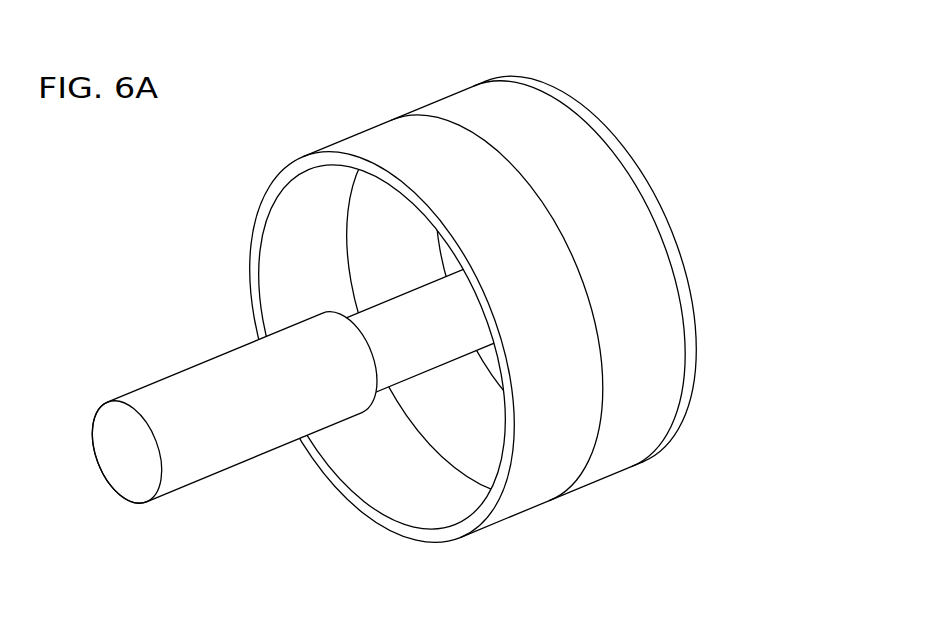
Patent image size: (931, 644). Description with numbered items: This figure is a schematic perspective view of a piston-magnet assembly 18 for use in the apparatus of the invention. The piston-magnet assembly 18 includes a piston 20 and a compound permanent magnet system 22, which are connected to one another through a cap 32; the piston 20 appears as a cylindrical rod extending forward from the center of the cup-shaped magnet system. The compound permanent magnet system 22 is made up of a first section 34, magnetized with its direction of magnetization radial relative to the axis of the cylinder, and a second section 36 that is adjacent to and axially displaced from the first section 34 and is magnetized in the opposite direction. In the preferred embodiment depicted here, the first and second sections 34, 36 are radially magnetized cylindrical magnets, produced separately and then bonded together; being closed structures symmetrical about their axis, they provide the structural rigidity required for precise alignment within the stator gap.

The piston-magnet assembly 18 is at (489, 318).
The piston 20 is at (230, 472).
The compound permanent magnet system 22 is at (395, 115).
The cap 32 is at (681, 243).
The first section 34 is at (538, 467).
The second section 36 is at (630, 433).